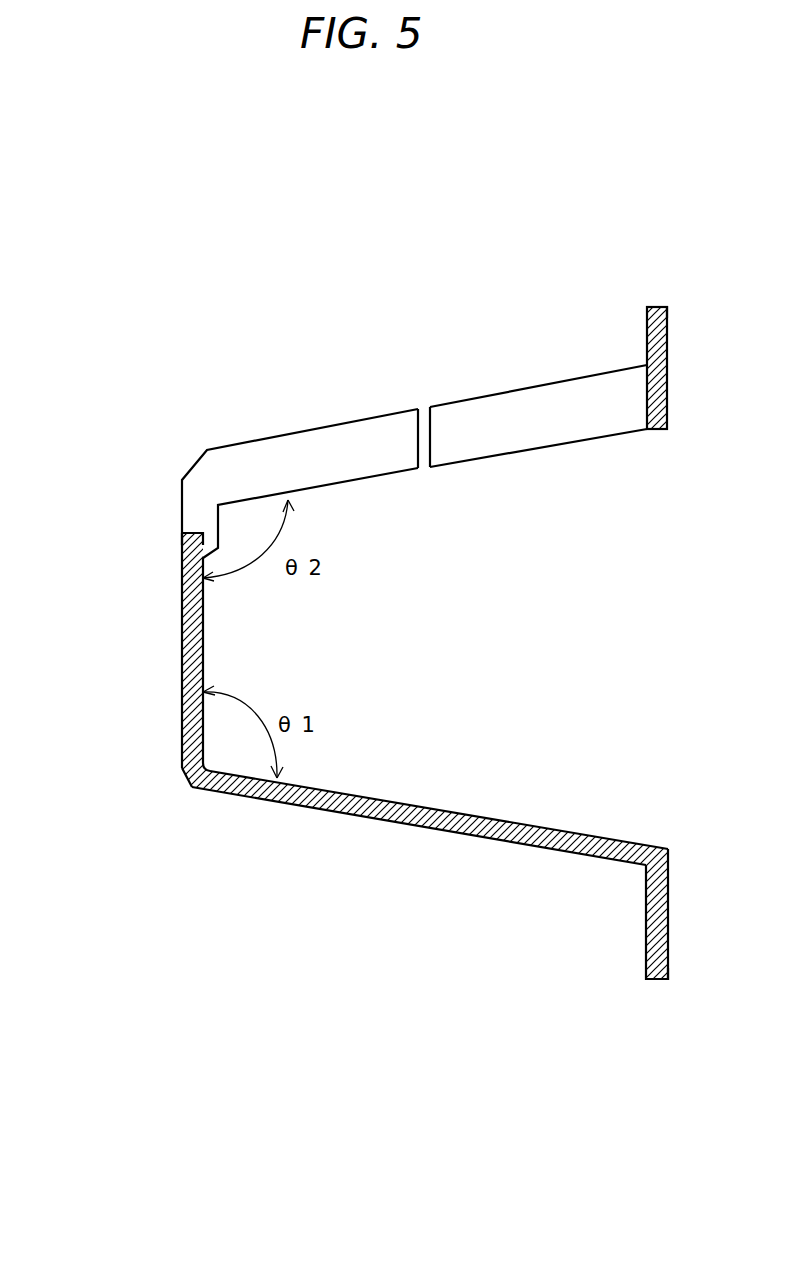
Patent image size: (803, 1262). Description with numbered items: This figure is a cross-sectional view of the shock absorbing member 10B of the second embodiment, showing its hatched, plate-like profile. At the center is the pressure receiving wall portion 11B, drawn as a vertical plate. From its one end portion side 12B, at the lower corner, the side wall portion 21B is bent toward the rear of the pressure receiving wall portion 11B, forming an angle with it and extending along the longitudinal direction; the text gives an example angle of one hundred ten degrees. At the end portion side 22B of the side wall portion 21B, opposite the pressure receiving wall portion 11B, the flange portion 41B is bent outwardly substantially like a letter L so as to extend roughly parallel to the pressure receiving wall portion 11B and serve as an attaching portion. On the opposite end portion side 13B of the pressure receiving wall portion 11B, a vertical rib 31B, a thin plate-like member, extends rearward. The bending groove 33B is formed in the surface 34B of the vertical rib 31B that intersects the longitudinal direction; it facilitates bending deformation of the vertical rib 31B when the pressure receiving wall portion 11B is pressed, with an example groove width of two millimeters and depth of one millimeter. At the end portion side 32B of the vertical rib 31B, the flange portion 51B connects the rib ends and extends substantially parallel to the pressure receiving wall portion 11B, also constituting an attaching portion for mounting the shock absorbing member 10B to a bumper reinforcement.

The shock absorbing member 10B is at (180, 415).
The pressure receiving wall portion 11B is at (181, 658).
The one end portion side 12B is at (182, 775).
The end portion side 13B is at (185, 545).
The side wall portion 21B is at (412, 827).
The end portion side of side wall portion 22B is at (635, 868).
The vertical rib 31B is at (300, 435).
The end portion side of vertical rib 32B is at (640, 383).
The bending groove 33B is at (423, 430).
The surface of vertical rib 34B is at (530, 415).
The flange portion 41B is at (645, 970).
The flange portion 51B is at (651, 312).